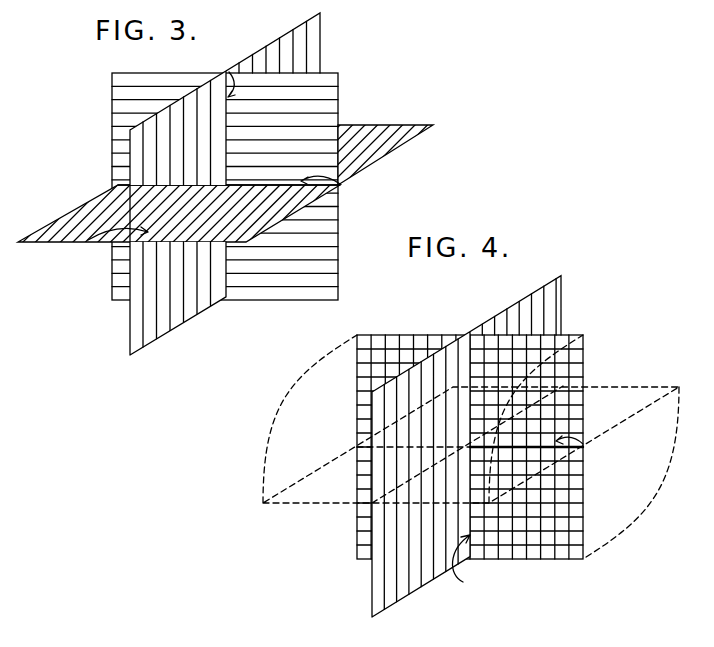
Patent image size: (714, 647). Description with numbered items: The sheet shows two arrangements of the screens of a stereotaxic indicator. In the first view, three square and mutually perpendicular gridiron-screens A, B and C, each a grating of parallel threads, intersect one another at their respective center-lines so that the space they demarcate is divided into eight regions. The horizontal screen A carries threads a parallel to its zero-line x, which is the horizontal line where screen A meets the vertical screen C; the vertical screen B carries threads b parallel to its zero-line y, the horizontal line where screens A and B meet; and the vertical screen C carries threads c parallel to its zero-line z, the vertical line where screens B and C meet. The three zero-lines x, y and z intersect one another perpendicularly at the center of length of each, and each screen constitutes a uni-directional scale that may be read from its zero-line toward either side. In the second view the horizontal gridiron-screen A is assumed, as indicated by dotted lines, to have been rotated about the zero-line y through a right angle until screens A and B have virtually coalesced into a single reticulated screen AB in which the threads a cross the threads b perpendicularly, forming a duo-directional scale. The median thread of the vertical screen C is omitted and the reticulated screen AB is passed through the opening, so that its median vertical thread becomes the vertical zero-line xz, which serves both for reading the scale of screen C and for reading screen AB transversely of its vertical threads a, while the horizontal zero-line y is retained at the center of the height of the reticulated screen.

In FIG. 3, the horizontal gridiron-screen A is at (53, 222).
In FIG. 4, the horizontal gridiron-screen A is at (280, 507).
In FIG. 3, the vertical gridiron-screen B is at (340, 90).
In FIG. 3, the vertical gridiron-screen C is at (287, 36).
In FIG. 4, the vertical gridiron-screen C is at (373, 588).
In FIG. 3, the threads of screen A a is at (385, 134).
In FIG. 4, the threads of screen A a is at (566, 520).
In FIG. 3, the threads of screen B b is at (293, 267).
In FIG. 3, the threads of screen C c is at (155, 313).
In FIG. 4, the threads of screen C c is at (427, 573).
In FIG. 3, the zero-line of screen A x is at (80, 242).
In FIG. 3, the zero-line of screen B y is at (341, 184).
In FIG. 4, the zero-line of screen B y is at (583, 444).
In FIG. 3, the zero-line of screen C z is at (229, 72).
In FIG. 4, the reticulated screen AB is at (585, 489).
In FIG. 4, the vertical zero-line xz is at (471, 571).